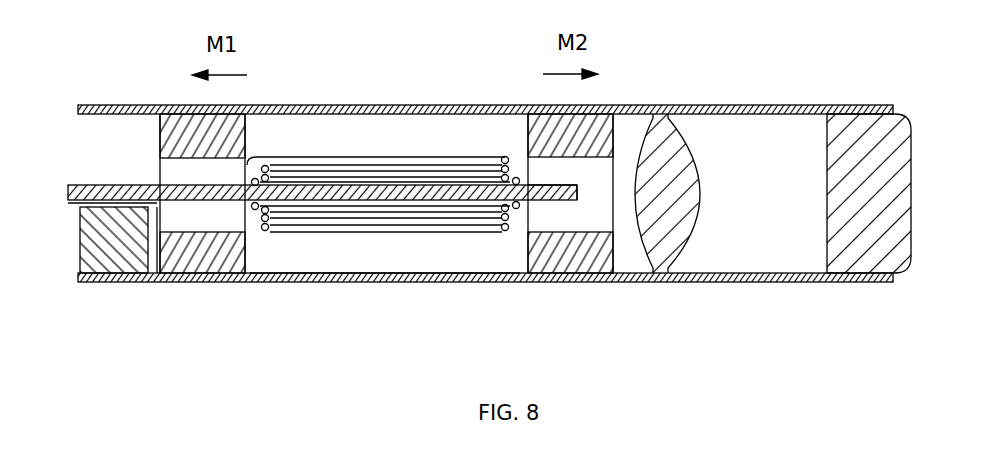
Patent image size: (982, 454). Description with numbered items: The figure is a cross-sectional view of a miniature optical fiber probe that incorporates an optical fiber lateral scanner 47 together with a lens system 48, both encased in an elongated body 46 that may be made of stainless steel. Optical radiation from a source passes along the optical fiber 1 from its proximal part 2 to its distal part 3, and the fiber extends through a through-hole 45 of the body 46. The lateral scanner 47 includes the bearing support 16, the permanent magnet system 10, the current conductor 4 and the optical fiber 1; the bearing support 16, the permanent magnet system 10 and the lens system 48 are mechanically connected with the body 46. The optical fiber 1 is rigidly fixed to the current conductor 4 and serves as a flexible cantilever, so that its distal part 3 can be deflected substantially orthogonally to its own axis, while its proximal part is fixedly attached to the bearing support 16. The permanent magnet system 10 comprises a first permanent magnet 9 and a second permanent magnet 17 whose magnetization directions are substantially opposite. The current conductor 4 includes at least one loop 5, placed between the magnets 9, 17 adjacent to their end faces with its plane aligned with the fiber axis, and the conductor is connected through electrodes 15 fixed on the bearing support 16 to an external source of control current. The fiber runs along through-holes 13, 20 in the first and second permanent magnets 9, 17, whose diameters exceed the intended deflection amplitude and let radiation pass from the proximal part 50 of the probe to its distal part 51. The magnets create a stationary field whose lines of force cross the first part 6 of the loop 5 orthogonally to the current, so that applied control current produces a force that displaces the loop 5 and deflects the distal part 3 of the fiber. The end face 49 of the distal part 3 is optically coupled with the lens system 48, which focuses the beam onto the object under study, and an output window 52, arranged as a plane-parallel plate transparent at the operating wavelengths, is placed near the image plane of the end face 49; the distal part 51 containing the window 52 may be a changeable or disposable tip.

The optical fiber 1 is at (150, 188).
The proximal part of the optical fiber 2 is at (98, 185).
The distal part of the optical fiber 3 is at (542, 188).
The current conductor 4 is at (378, 105).
The current conductor loop 5 is at (303, 160).
The first part of the current conductor loop 6 is at (266, 231).
The first permanent magnet 9 is at (188, 151).
The permanent magnet system 10 is at (188, 140).
The through-hole 13 is at (208, 215).
The electrodes 15 is at (75, 207).
The bearing support 16 is at (115, 250).
The second permanent magnet 17 is at (507, 230).
The through-hole 20 is at (545, 215).
The through-hole 45 is at (397, 143).
The elongated body 46 is at (445, 105).
The optical fiber lateral scanner 47 is at (385, 259).
The lens system 48 is at (678, 152).
The end face 49 is at (577, 190).
The proximal part of the miniature optical fiber probe 50 is at (95, 193).
The distal part of the miniature optical fiber probe 51 is at (763, 144).
The output window 52 is at (852, 105).